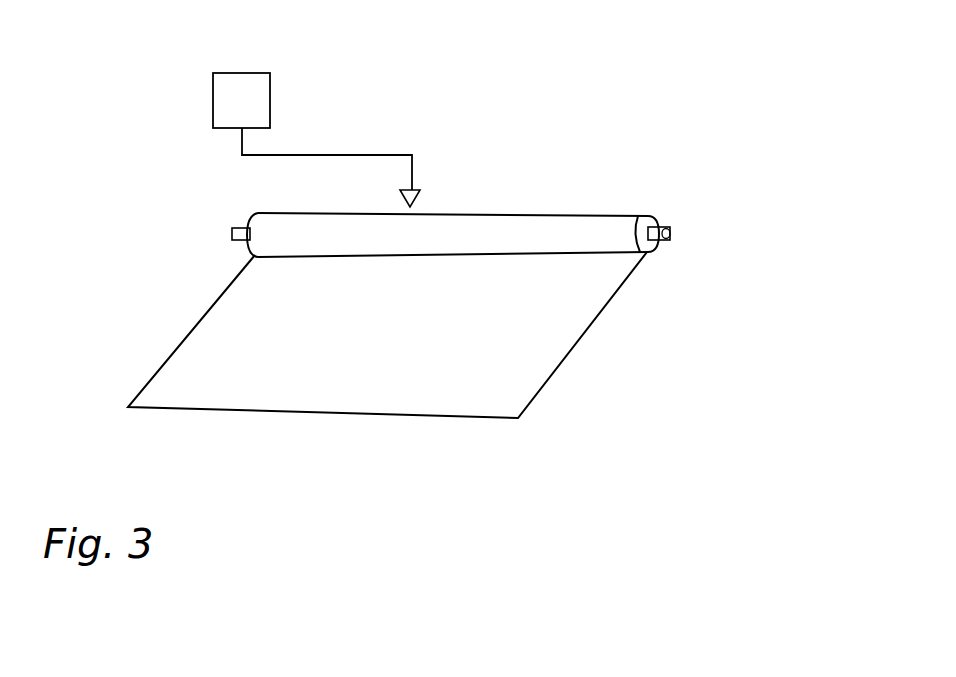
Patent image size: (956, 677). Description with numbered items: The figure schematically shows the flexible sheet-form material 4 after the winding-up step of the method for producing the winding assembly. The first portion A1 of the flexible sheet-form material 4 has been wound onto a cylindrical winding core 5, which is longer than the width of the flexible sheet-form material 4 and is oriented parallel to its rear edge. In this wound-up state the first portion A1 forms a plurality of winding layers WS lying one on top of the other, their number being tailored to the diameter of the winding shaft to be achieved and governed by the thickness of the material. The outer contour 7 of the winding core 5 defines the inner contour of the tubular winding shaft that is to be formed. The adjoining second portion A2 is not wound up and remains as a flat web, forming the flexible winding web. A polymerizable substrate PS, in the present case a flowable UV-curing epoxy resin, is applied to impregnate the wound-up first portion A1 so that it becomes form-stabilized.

The flexible sheet-form material 4 is at (316, 114).
The polymerizable substrate PS is at (241, 107).
The first portion A1 is at (452, 222).
The second portion A2 is at (437, 361).
The winding layers WS is at (657, 215).
The outer contour 7 is at (664, 231).
The winding core 5 is at (655, 246).